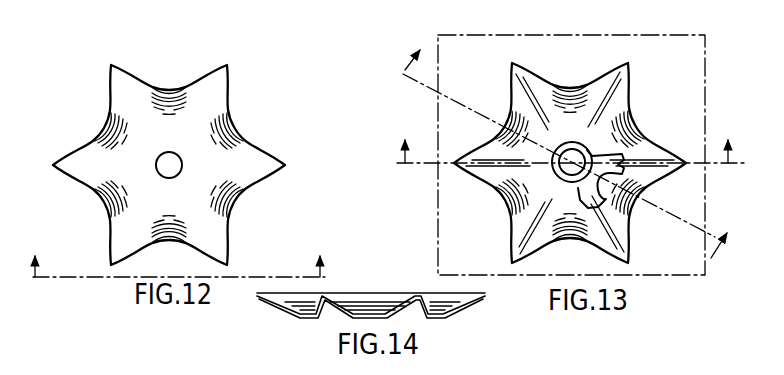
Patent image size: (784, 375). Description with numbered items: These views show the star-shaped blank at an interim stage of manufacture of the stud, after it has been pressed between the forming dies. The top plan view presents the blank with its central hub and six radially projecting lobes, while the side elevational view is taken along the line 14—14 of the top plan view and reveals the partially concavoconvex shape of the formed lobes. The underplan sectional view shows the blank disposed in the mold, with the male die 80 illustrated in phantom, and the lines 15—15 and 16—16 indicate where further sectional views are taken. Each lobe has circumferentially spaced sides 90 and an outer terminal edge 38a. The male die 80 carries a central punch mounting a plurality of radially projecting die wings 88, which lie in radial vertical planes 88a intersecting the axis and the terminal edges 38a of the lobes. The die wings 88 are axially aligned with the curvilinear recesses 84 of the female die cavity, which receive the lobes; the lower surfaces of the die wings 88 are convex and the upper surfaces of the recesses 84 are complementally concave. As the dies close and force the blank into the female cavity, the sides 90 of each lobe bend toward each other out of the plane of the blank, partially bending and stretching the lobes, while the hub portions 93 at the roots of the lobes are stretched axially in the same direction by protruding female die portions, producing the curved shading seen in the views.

In FIG. 12, the section line 14— 14 is at (178, 254).
In FIG. 13, the section line 15— 15 is at (567, 171).
In FIG. 13, the section line 16— 16 is at (561, 166).
In FIG. 13, the terminal edges of the lobes 38a is at (513, 62).
In FIG. 13, the male forming die 80 is at (700, 78).
In FIG. 13, the curvilinear recesses 84 is at (633, 220).
In FIG. 13, the die wings 88 is at (636, 192).
In FIG. 13, the radial vertical planes 88a is at (655, 162).
In FIG. 12, the sides of the lobes 90 is at (228, 102).
In FIG. 13, the sides of the lobes 90 is at (508, 197).
In FIG. 14, the sides of the lobes 90 is at (278, 303).
In FIG. 12, the hub portions at the roots of the lobes 93 is at (198, 193).
In FIG. 13, the hub portions at the roots of the lobes 93 is at (518, 215).
In FIG. 14, the hub portions at the roots of the lobes 93 is at (376, 297).